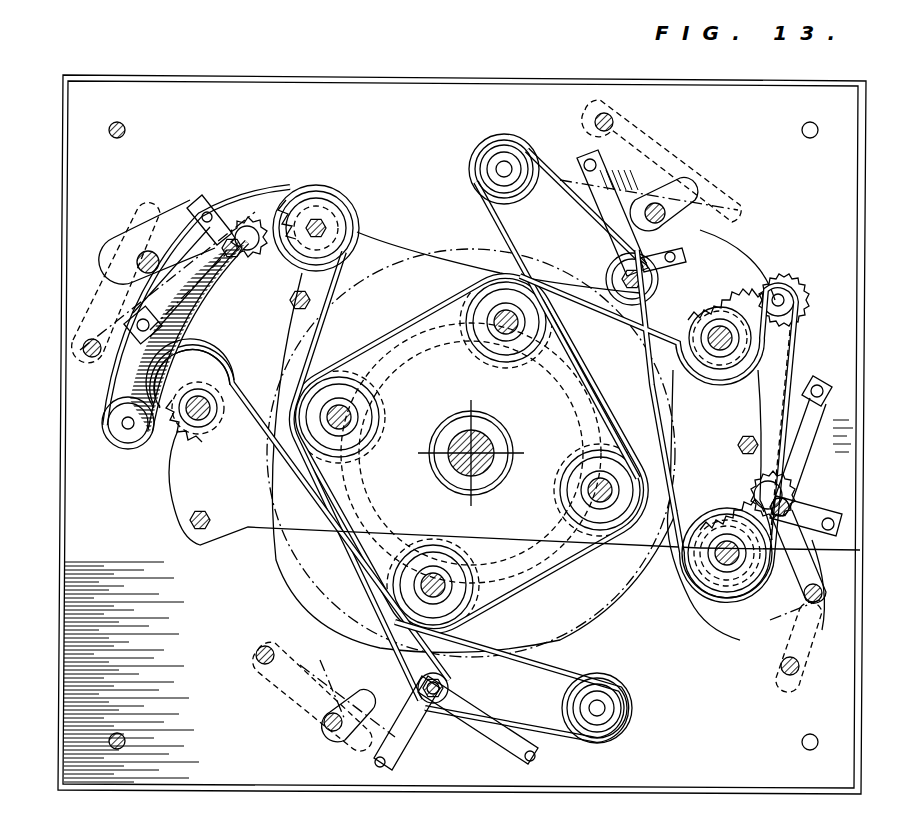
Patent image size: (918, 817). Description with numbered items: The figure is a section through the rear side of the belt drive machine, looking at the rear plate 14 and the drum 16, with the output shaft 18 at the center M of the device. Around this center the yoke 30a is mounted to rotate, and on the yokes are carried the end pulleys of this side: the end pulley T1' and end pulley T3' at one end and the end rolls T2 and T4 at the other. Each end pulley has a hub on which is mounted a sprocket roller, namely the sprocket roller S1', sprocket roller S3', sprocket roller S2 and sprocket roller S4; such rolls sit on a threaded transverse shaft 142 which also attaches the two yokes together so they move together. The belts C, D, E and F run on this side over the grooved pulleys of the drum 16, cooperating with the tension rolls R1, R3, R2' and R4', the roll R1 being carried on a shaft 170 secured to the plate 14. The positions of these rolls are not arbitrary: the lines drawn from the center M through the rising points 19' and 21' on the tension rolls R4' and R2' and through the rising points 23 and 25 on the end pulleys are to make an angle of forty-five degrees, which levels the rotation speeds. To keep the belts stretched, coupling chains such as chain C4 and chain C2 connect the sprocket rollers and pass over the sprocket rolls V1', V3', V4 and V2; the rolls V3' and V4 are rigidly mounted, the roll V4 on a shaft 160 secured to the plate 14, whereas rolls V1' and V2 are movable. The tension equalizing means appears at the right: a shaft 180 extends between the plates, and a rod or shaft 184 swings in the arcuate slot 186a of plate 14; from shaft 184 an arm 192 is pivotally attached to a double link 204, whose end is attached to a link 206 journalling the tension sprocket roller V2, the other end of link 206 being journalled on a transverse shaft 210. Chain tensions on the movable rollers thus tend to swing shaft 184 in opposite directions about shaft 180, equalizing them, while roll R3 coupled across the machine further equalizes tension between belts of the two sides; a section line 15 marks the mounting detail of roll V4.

The rear plate 14 is at (443, 80).
The drum 16 is at (290, 571).
The yoke 30a is at (440, 270).
The center of the device M is at (474, 455).
The output shaft 18 is at (445, 432).
The belt E is at (322, 325).
The belt F is at (512, 238).
The belt C is at (405, 640).
The belt D is at (482, 637).
The sprocket roller S1' is at (335, 204).
The rising point 23 is at (357, 226).
The sprocket roll V1' is at (247, 208).
The coupling chain C4 is at (128, 384).
The end pulley T1' is at (177, 279).
The transverse shaft 142 is at (255, 306).
The sprocket roller S3' is at (202, 434).
The rising point 25 is at (226, 386).
The sprocket roll V3' is at (119, 435).
The end pulley T3' is at (414, 483).
The tension roll R2' is at (516, 149).
The rising point 21' is at (485, 179).
The tension roll R4' is at (606, 268).
The rising point 19' is at (667, 200).
The sprocket roller S4 is at (708, 300).
The end roll T4 is at (718, 360).
The sprocket roll V4 is at (792, 286).
The shaft 160 is at (784, 300).
The coupling chain C2 is at (803, 332).
The section line 15 is at (812, 254).
The transverse shaft 210 is at (826, 378).
The link 206 is at (796, 450).
The double link 204 is at (830, 500).
The arm 192 is at (832, 550).
The tension sprocket roller V2 is at (758, 497).
The sprocket roller S2 is at (690, 572).
The arcuate slot 186a is at (748, 592).
The end roll T2 is at (715, 534).
The rod or shaft 184 is at (824, 612).
The shaft 180 is at (772, 684).
The shaft 170 is at (603, 708).
The tension roll R1 is at (620, 690).
The tension roll R3 is at (450, 688).